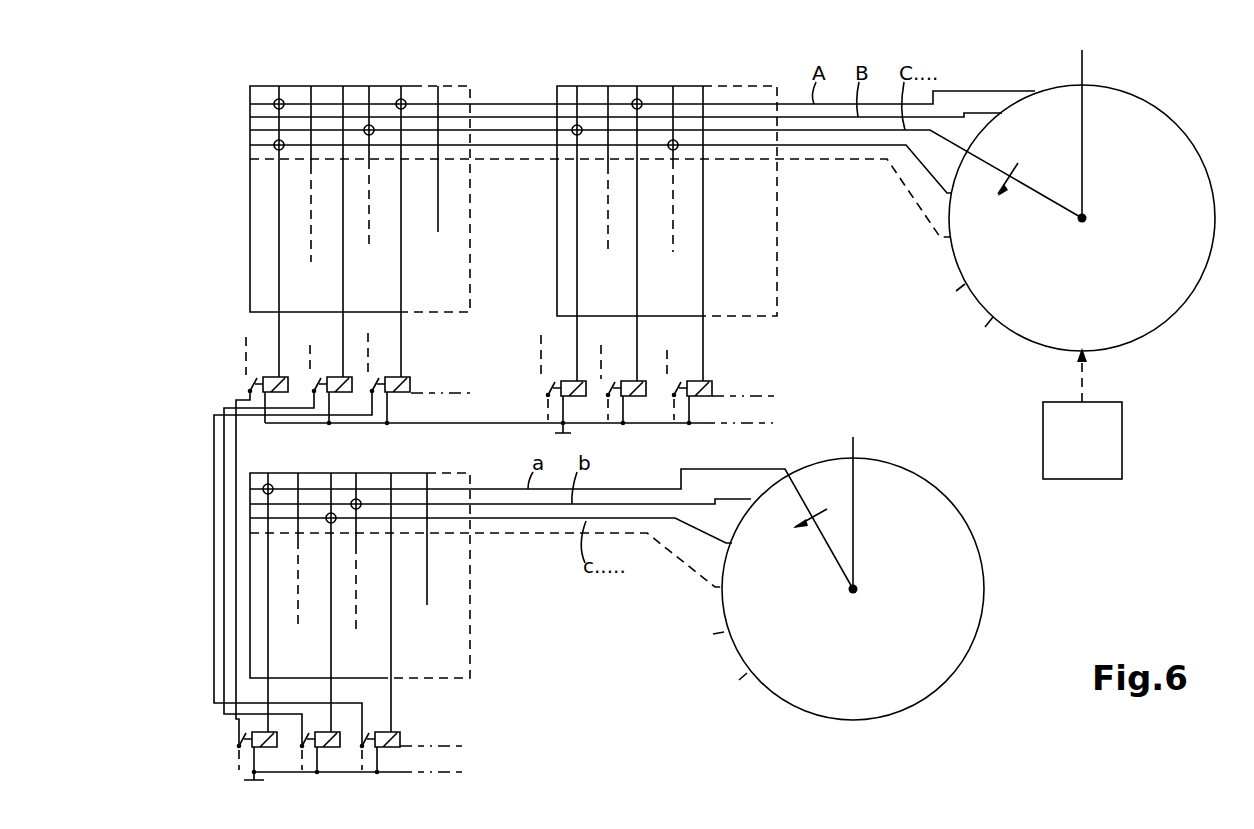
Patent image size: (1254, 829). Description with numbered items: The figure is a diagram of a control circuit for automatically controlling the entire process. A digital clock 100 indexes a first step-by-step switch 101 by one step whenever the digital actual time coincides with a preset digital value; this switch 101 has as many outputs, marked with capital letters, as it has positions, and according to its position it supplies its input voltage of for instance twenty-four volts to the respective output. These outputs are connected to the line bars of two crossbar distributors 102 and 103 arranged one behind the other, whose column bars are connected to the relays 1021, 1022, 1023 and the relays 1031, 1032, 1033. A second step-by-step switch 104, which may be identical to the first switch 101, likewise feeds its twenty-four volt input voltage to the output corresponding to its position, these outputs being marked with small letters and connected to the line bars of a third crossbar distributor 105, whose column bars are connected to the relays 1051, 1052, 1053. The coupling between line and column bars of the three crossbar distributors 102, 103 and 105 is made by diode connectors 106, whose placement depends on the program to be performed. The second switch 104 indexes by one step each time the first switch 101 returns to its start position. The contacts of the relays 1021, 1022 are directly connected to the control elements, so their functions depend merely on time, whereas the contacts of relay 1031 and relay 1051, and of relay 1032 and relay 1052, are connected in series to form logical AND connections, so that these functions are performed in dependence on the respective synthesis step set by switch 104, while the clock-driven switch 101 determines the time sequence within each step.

The digital clock 100 is at (1122, 412).
The first step-by-step switch 101 is at (1215, 165).
The crossbar distributor 102 is at (690, 86).
The crossbar distributor 103 is at (300, 86).
The second step-by-step switch 104 is at (985, 598).
The third crossbar distributor 105 is at (475, 618).
The diode plugs or connectors 106 is at (274, 143).
The relay 1031 is at (262, 378).
The relay 1032 is at (330, 378).
The relay 1033 is at (408, 382).
The relay 1021 is at (562, 382).
The relay 1022 is at (624, 382).
The relay 1023 is at (706, 383).
The relay 1051 is at (255, 748).
The relay 1052 is at (320, 755).
The relay 1053 is at (395, 755).